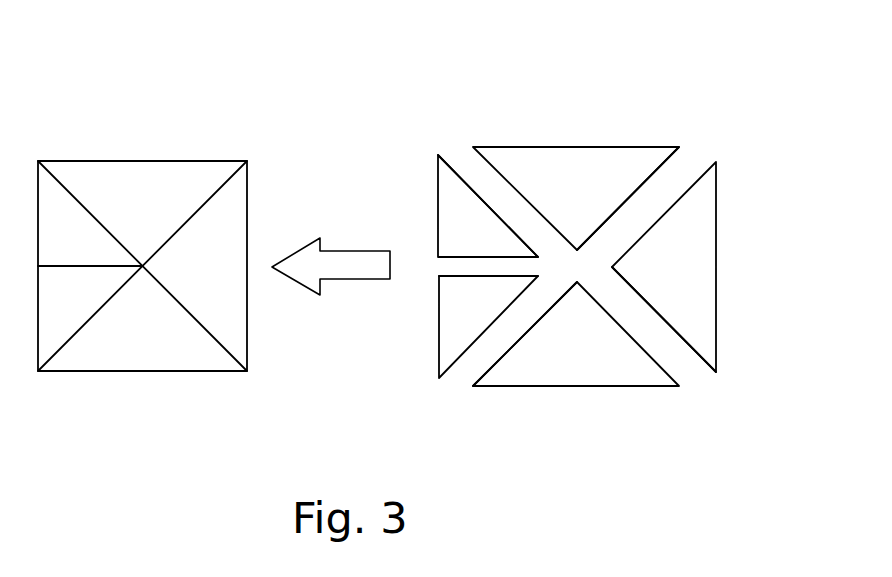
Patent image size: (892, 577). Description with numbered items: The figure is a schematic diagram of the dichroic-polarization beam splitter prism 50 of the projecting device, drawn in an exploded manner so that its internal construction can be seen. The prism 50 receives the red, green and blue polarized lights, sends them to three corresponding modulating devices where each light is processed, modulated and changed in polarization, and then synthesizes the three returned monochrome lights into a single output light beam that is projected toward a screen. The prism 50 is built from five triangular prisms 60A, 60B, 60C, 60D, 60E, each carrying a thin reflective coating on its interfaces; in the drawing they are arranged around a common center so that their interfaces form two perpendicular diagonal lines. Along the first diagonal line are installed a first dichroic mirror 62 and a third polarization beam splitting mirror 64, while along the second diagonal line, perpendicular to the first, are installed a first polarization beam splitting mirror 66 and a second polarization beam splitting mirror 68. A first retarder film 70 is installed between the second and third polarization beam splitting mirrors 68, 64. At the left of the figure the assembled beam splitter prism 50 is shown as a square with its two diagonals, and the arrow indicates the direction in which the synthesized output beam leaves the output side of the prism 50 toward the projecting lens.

The dichroic-polarization beam splitter prism 50 is at (158, 161).
The triangular prism 60A is at (633, 147).
The triangular prism 60B is at (716, 318).
The triangular prism 60C is at (552, 387).
The triangular prism 60D is at (437, 342).
The triangular prism 60E is at (438, 192).
The first dichroic mirror 62 is at (697, 356).
The third polarization beam splitting mirror 64 is at (462, 178).
The first polarization beam splitting mirror 66 is at (663, 164).
The second polarization beam splitting mirror 68 is at (478, 376).
The first retarder film 70 is at (460, 277).